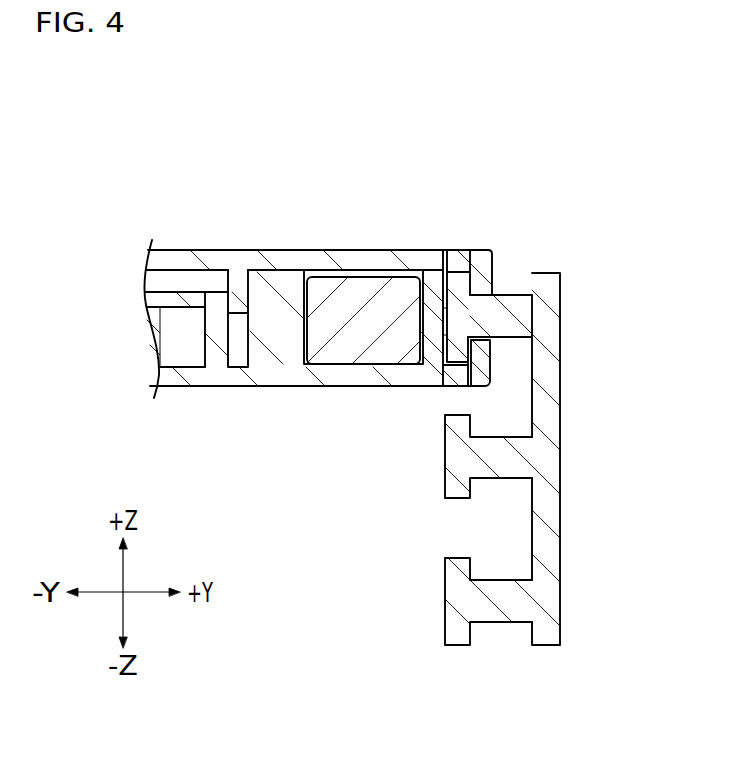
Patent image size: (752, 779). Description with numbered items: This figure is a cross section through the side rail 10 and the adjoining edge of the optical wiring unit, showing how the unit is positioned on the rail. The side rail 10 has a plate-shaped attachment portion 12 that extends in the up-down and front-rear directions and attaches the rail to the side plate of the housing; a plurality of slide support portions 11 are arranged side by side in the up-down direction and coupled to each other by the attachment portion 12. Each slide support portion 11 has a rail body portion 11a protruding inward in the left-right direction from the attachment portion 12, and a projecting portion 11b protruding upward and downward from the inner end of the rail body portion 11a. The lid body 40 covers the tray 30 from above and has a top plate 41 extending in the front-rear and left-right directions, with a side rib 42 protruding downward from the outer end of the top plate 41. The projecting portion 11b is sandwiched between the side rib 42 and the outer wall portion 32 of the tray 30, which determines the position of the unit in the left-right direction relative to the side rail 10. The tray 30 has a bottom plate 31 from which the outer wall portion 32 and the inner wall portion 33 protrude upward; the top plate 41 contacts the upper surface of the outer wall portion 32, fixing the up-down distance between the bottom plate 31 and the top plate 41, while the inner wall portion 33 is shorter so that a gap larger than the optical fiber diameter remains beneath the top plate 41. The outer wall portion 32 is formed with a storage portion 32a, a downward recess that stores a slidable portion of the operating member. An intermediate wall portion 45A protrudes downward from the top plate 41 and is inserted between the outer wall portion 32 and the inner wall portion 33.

The side rail 10 is at (560, 616).
The slide support portion 11 is at (612, 123).
The rail body portion 11a is at (513, 300).
The projecting portion 11b is at (455, 278).
The attachment portion 12 is at (559, 374).
The tray 30 is at (178, 387).
The bottom plate 31 is at (278, 372).
The outer wall portion 32 is at (290, 280).
The storage portion 32a is at (417, 274).
The inner wall portion 33 is at (218, 300).
The lid body 40 is at (175, 250).
The top plate 41 is at (350, 258).
The side rib 42 is at (480, 284).
The intermediate wall portion 45A is at (238, 314).